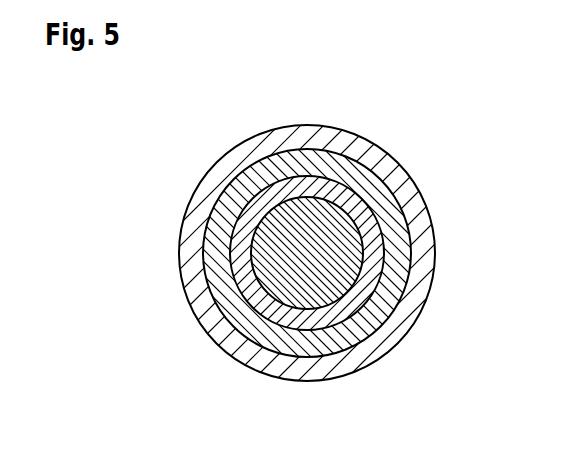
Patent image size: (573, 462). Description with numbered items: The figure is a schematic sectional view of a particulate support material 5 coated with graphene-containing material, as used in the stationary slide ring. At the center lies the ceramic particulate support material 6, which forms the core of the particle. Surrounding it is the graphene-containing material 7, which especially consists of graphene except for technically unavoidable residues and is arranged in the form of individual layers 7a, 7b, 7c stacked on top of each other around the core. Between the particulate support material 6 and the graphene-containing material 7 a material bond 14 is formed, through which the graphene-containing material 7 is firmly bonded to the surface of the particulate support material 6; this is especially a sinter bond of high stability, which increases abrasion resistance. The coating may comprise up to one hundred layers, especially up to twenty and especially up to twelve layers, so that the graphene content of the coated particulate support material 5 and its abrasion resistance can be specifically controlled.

The particulate support material coated with graphene-containing material 5 is at (183, 165).
The particulate support material 6 is at (322, 287).
The graphene-containing material 7 is at (268, 362).
The layer 7a is at (325, 192).
The layer 7b is at (350, 172).
The layer 7c is at (390, 173).
The material bond 14 is at (360, 250).